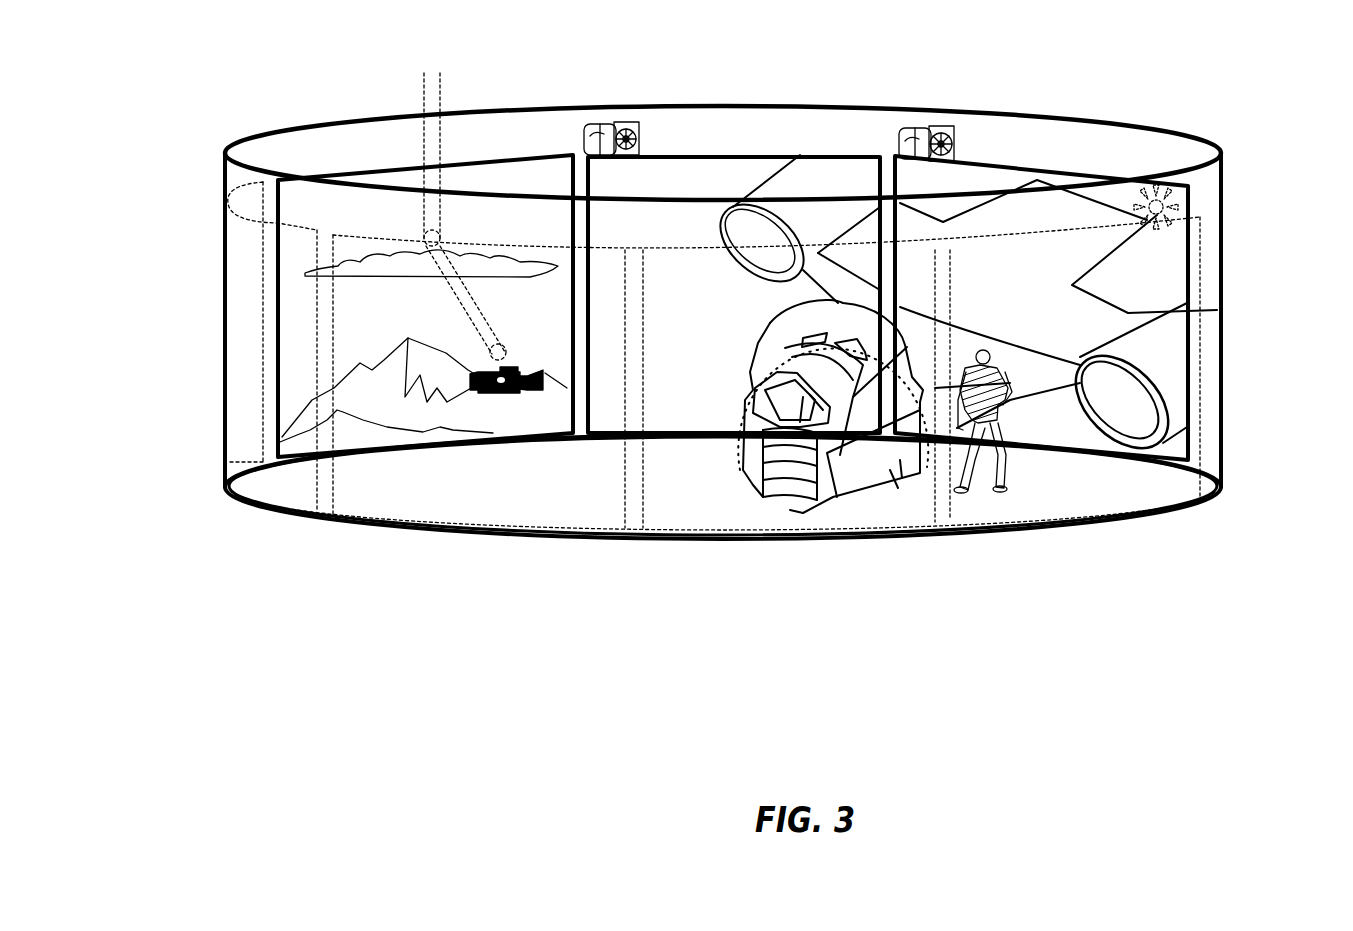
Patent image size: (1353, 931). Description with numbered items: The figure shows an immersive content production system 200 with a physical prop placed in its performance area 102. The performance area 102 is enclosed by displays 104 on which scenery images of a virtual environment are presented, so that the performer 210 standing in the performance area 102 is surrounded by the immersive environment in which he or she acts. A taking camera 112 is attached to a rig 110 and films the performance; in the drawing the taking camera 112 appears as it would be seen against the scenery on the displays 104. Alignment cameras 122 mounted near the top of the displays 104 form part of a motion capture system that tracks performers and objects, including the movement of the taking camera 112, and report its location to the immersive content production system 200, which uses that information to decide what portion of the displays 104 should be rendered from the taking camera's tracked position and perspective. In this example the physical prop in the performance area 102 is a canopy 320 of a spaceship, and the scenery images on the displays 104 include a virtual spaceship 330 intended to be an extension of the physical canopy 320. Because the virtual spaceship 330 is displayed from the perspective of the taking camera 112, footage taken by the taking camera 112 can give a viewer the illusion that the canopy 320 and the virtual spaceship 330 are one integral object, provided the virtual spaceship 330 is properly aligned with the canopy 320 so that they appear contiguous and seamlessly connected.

The immersive content production system 200 is at (1128, 96).
The performance area 102 is at (1160, 503).
The displays 104 is at (520, 157).
The rig 110 is at (426, 101).
The taking camera 112 is at (470, 372).
The alignment cameras 122 is at (640, 136).
The performer 210 is at (1000, 455).
The physical prop (canopy) 320 is at (857, 492).
The virtual spaceship 330 is at (1217, 310).